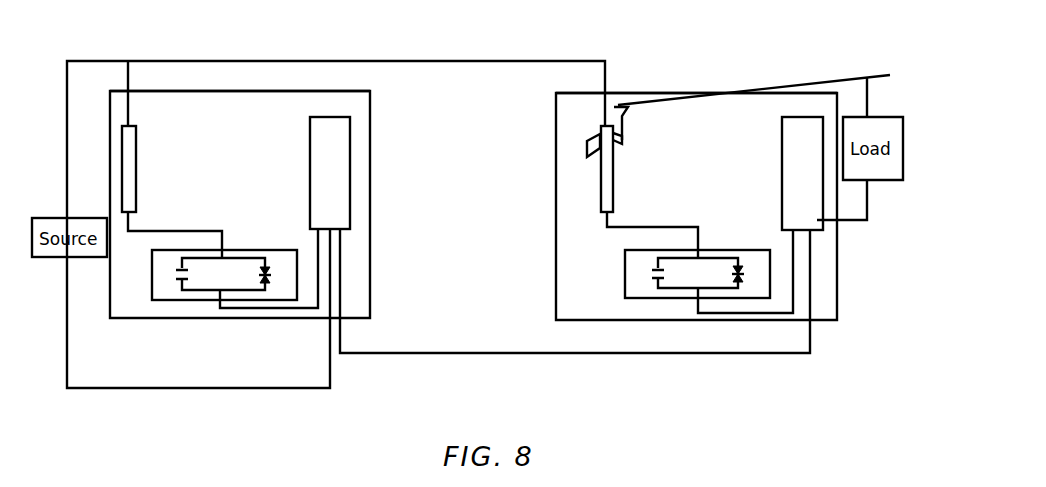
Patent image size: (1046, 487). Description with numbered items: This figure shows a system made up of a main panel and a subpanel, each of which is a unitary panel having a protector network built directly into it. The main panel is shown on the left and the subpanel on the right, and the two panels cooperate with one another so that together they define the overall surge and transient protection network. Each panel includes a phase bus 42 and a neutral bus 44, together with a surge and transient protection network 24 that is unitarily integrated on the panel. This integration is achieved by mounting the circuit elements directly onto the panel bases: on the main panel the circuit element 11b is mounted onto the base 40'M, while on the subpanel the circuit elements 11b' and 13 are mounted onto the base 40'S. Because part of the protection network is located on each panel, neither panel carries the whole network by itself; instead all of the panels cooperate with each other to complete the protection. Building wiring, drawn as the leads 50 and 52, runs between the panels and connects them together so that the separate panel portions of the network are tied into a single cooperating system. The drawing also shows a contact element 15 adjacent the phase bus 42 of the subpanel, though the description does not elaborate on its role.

The base 40'M is at (196, 67).
The lead 50 is at (402, 60).
The phase bus 42 is at (137, 158).
The neutral bus 44 is at (316, 152).
The surge and transient protection network 24 is at (245, 244).
The circuit element 13 is at (266, 265).
The circuit element 11b is at (207, 304).
The base 40'S is at (752, 96).
The contact 15 is at (587, 148).
The circuit element 11b' is at (653, 273).
The lead 52 is at (478, 357).